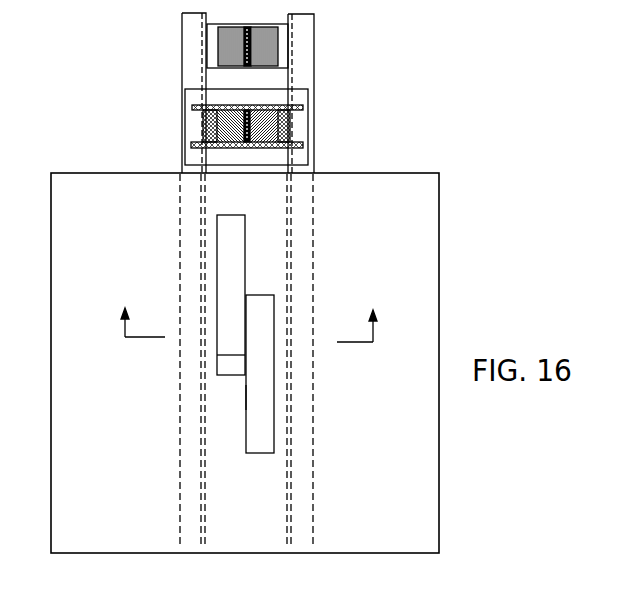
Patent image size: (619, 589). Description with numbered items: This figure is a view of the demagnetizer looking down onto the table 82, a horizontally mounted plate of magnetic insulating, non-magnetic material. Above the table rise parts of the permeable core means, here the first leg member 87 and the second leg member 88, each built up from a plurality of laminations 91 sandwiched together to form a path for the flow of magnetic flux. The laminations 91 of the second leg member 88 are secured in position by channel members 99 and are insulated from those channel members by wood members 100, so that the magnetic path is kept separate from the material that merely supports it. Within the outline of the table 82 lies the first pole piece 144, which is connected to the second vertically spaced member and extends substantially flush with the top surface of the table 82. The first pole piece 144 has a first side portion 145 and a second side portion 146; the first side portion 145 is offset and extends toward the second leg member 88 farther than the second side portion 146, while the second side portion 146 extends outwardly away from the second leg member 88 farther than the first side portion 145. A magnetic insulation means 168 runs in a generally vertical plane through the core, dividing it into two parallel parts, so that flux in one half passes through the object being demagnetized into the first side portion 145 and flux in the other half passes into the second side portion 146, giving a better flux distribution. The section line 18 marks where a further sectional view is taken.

The section line 18- 18 is at (248, 313).
The table 82 is at (58, 353).
The first leg member 87 is at (195, 42).
The second leg member 88 is at (200, 130).
The laminations 91 is at (270, 25).
The channel members 99 is at (196, 152).
The wood members 100 is at (289, 104).
The first pole piece 144 is at (228, 353).
The first side portion 145 is at (227, 260).
The second side portion 146 is at (262, 387).
The magnetic insulation means 168 is at (246, 398).